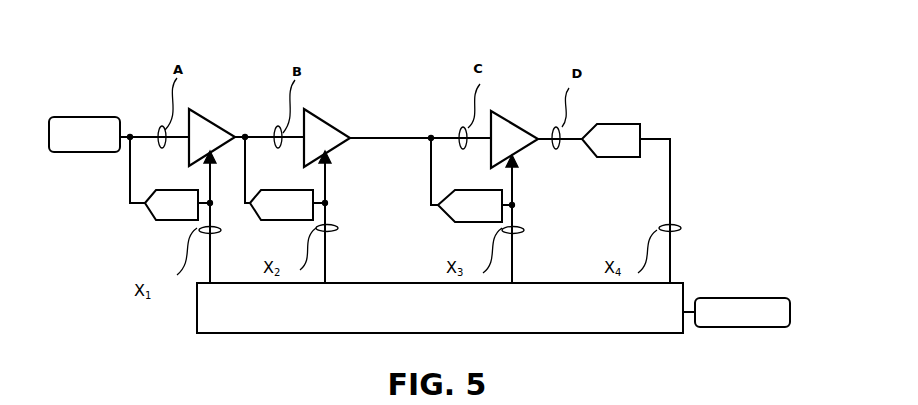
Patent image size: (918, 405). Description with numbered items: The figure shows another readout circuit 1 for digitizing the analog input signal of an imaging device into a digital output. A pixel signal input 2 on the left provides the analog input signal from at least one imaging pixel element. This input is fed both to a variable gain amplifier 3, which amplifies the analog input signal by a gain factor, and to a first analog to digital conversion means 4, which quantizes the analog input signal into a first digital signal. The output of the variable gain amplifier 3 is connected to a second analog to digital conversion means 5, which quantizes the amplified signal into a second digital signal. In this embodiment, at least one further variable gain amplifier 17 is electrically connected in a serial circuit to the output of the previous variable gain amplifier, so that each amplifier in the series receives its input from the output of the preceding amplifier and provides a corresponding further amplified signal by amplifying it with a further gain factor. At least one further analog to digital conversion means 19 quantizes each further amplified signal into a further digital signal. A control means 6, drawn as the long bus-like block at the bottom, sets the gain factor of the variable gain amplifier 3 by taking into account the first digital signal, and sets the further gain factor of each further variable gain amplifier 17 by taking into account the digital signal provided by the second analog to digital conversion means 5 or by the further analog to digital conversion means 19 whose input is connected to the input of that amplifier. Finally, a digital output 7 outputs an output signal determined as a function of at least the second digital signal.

The readout circuit 1 is at (692, 131).
The pixel signal input 2 is at (75, 153).
The variable gain amplifier 3 is at (203, 113).
The first analog to digital conversion means 4 is at (153, 215).
The second analog to digital conversion means 5 is at (273, 222).
The control means 6 is at (333, 333).
The digital output 7 is at (717, 297).
The further variable gain amplifier 17 is at (492, 117).
The further analog to digital conversion means 19 is at (505, 217).